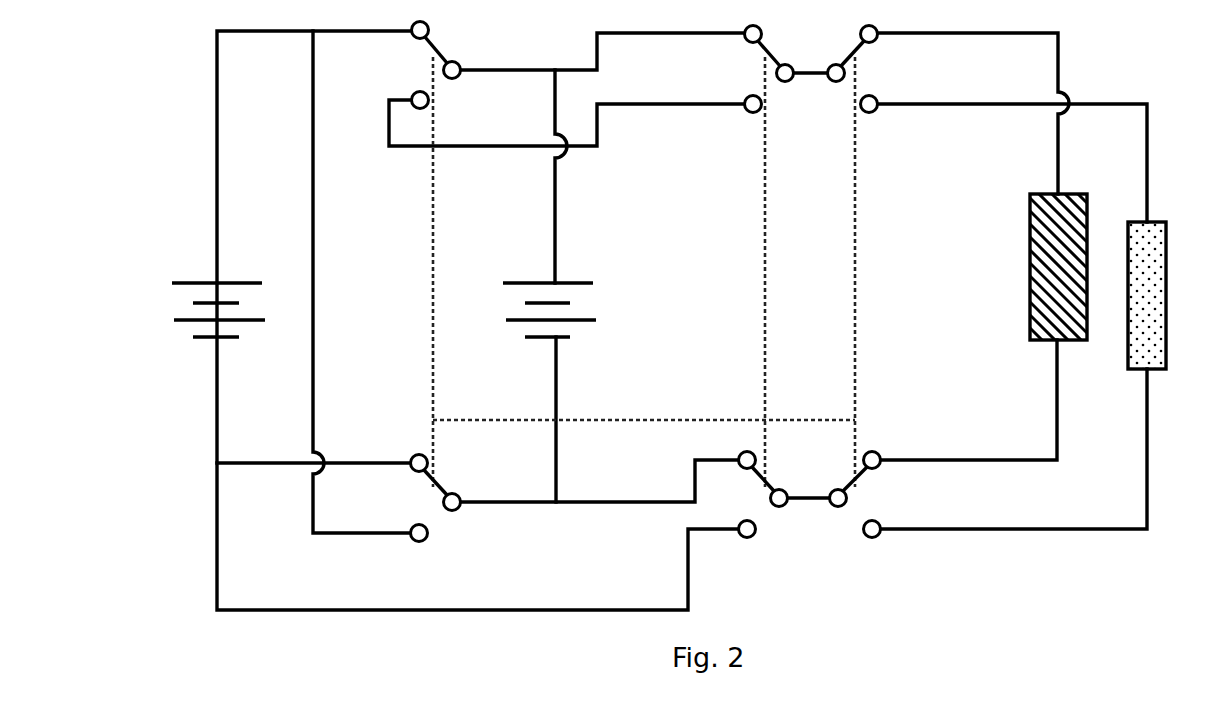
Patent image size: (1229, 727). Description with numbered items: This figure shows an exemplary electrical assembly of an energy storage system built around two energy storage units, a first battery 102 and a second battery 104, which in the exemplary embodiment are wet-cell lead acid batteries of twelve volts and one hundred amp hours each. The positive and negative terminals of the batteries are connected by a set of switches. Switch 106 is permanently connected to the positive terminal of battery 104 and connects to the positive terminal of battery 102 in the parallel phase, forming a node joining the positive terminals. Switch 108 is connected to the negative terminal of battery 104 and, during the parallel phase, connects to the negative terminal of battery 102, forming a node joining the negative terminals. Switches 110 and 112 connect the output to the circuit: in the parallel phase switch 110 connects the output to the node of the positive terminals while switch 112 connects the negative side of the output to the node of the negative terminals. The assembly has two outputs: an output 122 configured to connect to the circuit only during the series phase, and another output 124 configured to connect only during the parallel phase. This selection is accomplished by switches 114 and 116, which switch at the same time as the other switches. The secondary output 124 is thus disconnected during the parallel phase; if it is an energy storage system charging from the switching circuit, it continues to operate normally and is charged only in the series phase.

The first battery 102 is at (199, 313).
The second battery 104 is at (527, 313).
The switch 106 is at (416, 65).
The switch 108 is at (417, 498).
The switch 110 is at (761, 69).
The switch 112 is at (767, 495).
The switch 114 is at (868, 69).
The switch 116 is at (870, 495).
The output 122 is at (1064, 267).
The secondary output 124 is at (1172, 295).